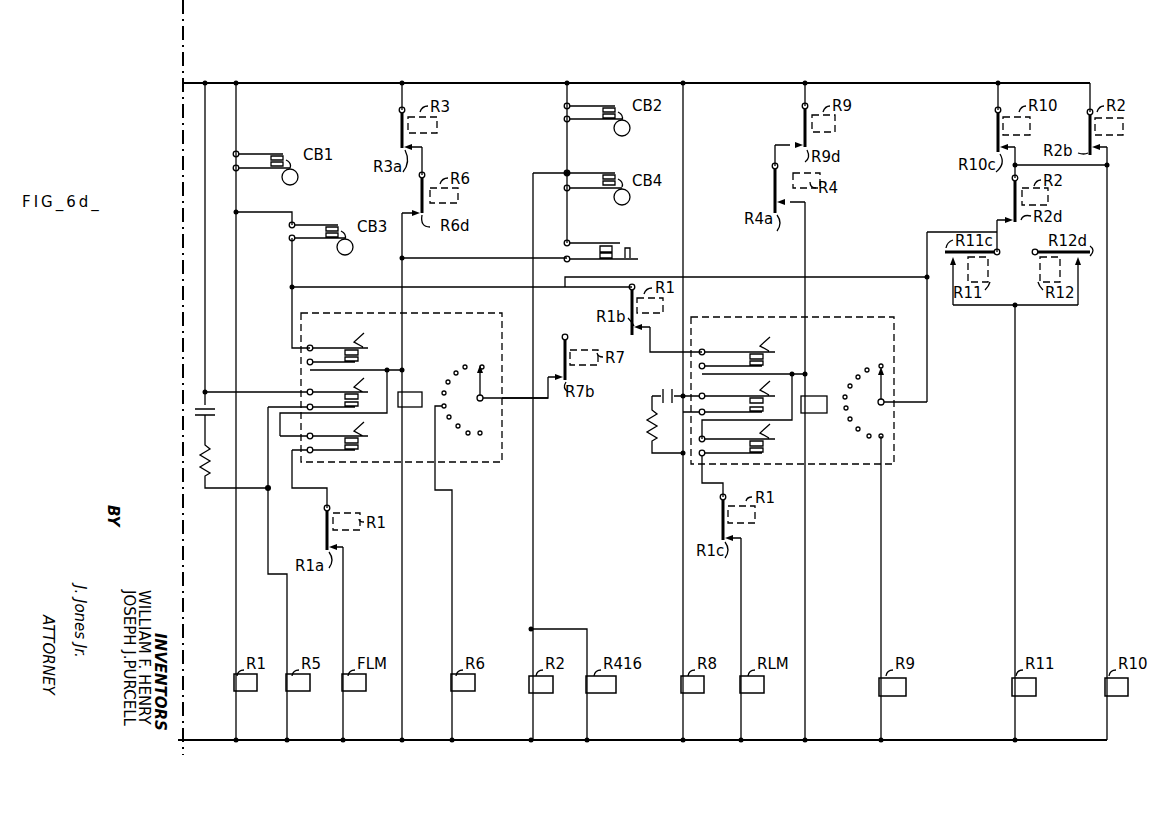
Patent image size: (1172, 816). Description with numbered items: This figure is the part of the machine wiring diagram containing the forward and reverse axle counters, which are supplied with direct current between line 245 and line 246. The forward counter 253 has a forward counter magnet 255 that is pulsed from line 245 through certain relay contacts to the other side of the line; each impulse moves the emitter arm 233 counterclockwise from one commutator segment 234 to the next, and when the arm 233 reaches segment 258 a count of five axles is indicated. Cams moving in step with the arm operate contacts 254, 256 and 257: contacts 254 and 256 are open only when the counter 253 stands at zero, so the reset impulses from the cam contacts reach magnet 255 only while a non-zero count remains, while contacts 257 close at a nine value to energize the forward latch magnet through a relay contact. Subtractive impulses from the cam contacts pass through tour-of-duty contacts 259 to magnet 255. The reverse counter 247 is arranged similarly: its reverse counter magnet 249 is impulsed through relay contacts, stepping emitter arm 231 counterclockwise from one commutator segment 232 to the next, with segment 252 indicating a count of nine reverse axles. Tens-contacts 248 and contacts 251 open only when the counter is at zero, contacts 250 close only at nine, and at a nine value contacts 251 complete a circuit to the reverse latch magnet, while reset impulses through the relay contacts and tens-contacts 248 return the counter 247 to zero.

The line 245 is at (485, 83).
The line 246 is at (500, 740).
The forward counter 253 is at (477, 462).
The contacts 254 is at (355, 359).
The forward counter magnet 255 is at (400, 385).
The contacts 256 is at (345, 401).
The contacts 257 is at (355, 454).
The segment 258 is at (447, 405).
The emitter arm 233 is at (495, 400).
The commutator segment 234 is at (466, 364).
The tour-of-duty contacts 259 is at (620, 256).
The reverse counter 247 is at (851, 464).
The tens-contacts 248 is at (756, 365).
The reverse counter magnet 249 is at (808, 416).
The contacts 250 is at (748, 408).
The contacts 251 is at (760, 455).
The segment 252 is at (879, 437).
The emitter arm 231 is at (878, 410).
The commutator segment 232 is at (866, 367).